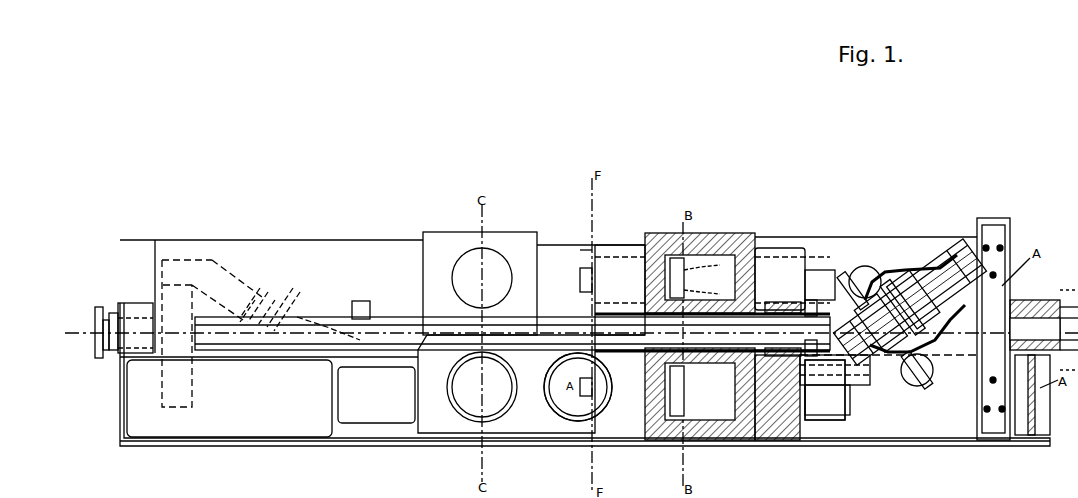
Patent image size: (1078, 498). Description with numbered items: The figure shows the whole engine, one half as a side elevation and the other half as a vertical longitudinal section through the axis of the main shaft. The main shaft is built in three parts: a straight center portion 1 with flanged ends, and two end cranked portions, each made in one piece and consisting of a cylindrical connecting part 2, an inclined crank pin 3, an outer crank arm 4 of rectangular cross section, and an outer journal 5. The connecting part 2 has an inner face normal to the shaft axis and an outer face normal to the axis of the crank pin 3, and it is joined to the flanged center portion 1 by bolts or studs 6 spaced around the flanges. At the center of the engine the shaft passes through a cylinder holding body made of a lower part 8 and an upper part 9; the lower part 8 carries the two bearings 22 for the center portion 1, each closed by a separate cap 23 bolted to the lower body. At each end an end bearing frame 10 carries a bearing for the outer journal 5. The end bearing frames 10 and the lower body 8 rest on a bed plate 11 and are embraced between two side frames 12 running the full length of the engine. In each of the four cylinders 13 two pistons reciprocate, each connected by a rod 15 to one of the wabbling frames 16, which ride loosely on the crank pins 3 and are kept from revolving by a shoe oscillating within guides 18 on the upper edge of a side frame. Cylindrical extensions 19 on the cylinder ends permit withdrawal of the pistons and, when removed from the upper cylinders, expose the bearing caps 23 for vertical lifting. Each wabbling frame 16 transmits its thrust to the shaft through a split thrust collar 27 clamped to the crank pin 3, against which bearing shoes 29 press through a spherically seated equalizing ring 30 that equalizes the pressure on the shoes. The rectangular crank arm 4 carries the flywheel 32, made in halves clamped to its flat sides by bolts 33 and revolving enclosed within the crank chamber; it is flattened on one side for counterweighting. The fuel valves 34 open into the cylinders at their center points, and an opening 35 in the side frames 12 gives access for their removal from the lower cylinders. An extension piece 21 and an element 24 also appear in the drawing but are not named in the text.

The straight center portion 1 is at (622, 327).
The cylindrical connecting part 2 is at (356, 302).
The inclined crank pin 3 is at (236, 282).
The outer crank arm 4 is at (173, 270).
The outer journal 5 is at (111, 313).
The bolts or studs 6 is at (812, 310).
The lower part of cylinder holding body 8 is at (736, 442).
The upper part of cylinder holding body 9 is at (440, 243).
The end bearing frame 10 is at (1036, 405).
The bed plate 11 is at (284, 446).
The side frames 12 is at (207, 430).
The cylinders 13 is at (581, 252).
The rod 15 is at (819, 280).
The wabbling frame 16 is at (914, 276).
The guides 18 is at (323, 300).
The cylindrical extensions 19 is at (771, 250).
The recess 21 is at (358, 408).
The bearings 22 is at (808, 352).
The bearing caps 23 is at (788, 303).
The stop 24 is at (583, 276).
The split thrust collar 27 is at (292, 290).
The bearing shoes 29 is at (886, 296).
The spherically seated equalizing ring 30 is at (874, 285).
The flywheel 32 is at (993, 232).
The bolts 33 is at (1002, 250).
The fuel valves 34 is at (580, 388).
The opening 35 is at (578, 421).